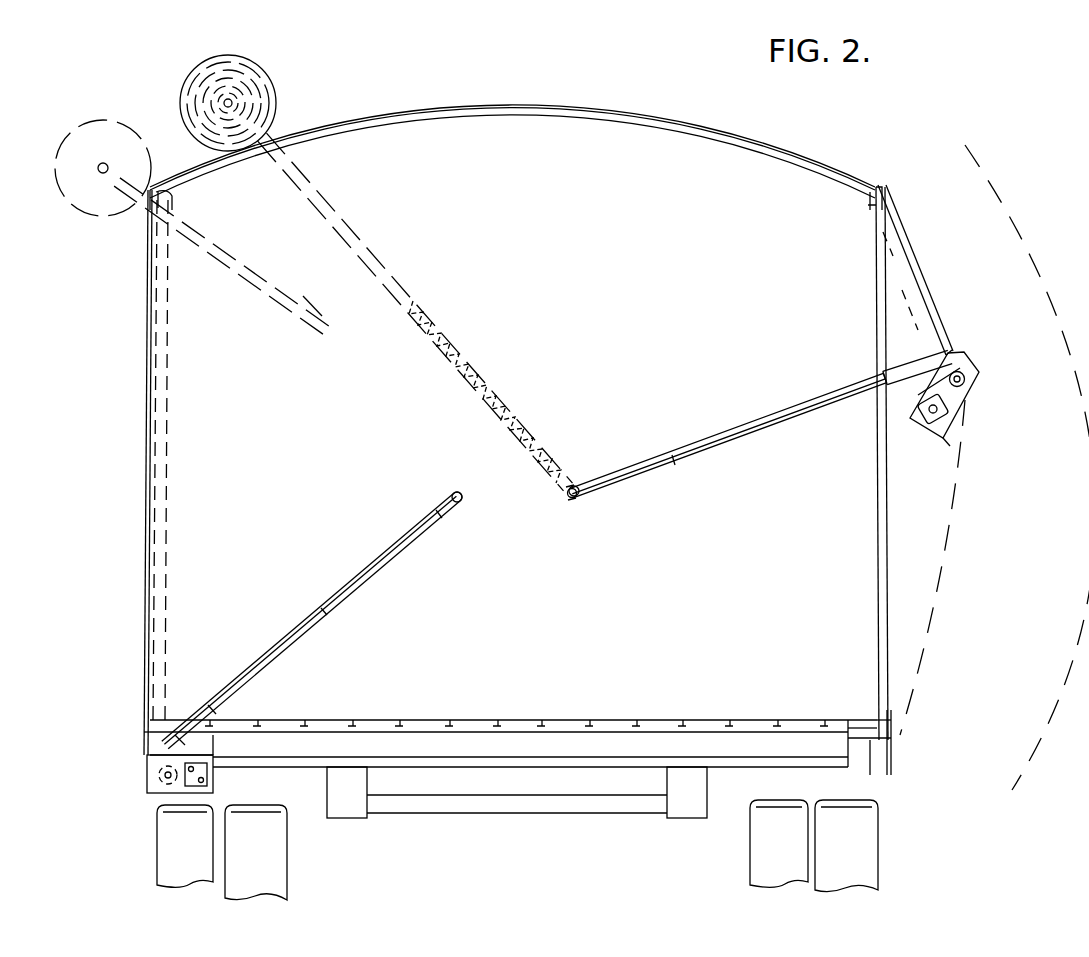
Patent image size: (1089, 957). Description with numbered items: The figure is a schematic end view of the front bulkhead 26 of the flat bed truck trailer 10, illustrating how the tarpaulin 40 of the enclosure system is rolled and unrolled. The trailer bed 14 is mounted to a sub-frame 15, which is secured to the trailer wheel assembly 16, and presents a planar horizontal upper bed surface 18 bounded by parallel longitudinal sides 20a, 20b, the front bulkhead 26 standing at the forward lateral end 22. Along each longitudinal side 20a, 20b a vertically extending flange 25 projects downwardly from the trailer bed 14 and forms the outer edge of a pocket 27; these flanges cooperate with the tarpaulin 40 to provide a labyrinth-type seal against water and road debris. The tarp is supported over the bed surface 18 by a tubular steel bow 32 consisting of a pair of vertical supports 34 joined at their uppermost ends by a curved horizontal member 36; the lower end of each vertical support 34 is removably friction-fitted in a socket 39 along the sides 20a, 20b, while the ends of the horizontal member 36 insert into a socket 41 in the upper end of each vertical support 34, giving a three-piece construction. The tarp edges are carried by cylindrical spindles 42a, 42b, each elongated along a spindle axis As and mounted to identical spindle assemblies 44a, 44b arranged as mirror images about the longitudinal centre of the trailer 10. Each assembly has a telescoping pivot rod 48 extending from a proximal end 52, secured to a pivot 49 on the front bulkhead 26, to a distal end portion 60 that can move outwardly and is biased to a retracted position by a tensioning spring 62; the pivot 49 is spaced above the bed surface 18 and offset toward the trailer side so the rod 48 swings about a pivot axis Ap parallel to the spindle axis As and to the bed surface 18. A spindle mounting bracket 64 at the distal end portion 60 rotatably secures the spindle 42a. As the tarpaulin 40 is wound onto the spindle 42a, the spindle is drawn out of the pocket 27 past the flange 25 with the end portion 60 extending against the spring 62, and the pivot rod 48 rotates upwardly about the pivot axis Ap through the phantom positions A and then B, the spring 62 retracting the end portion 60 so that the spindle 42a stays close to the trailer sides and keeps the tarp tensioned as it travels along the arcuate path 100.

The flat bed truck trailer 10 is at (118, 582).
The trailer bed 14 is at (513, 706).
The sub-frame 15 is at (492, 815).
The trailer wheel assembly 16 is at (268, 865).
The upper bed surface 18 is at (518, 718).
The longitudinal side 20a is at (892, 740).
The longitudinal side 20b is at (145, 733).
The forward lateral end 22 is at (608, 760).
The flange 25 is at (147, 770).
The front bulkhead 26 is at (660, 606).
The pocket 27 is at (866, 772).
The bow 32 is at (877, 585).
The vertical support 34 is at (165, 497).
The curved horizontal member 36 is at (518, 118).
The socket 39 is at (868, 724).
The tarpaulin 40 is at (146, 432).
The socket 41 is at (175, 198).
The spindle 42a is at (975, 408).
The spindle 42b is at (150, 795).
The spindle assembly 44a is at (692, 464).
The spindle assembly 44b is at (579, 513).
The pivot rod 48 is at (728, 415).
The pivot 49 is at (566, 500).
The proximal end 52 is at (442, 516).
The distal end portion 60 is at (180, 715).
The tensioning spring 62 is at (385, 547).
The spindle mounting bracket 64 is at (915, 405).
The arcuate path 100 is at (1040, 584).
The phantom position A is at (357, 240).
The phantom position B is at (255, 282).
The pivot axis Ap is at (585, 526).
The spindle axis As is at (966, 374).